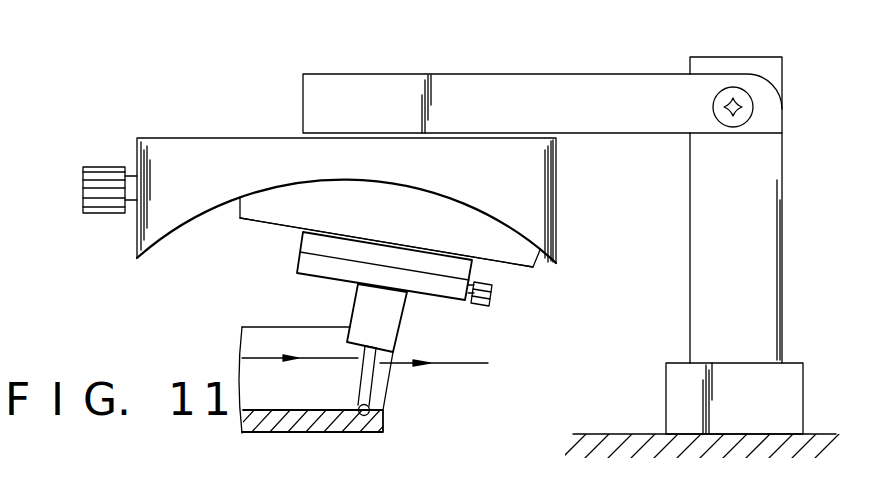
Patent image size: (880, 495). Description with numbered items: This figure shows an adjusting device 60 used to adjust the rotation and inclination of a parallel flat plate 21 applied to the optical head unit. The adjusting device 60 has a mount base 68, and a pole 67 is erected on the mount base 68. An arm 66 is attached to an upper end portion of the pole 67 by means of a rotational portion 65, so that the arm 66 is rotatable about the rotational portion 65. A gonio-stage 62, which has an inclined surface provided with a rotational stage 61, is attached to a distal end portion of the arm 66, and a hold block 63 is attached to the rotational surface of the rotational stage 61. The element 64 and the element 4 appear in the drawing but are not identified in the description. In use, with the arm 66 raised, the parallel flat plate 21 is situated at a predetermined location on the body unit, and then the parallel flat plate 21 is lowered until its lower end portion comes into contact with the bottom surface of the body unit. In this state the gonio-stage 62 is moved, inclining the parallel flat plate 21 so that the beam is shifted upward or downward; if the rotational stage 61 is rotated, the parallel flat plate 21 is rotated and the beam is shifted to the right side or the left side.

The conveyor table / belt support 4 is at (273, 422).
The parallel flat plate 21 is at (373, 378).
The adjusting device 60 is at (398, 66).
The rotational stage 61 is at (302, 262).
The gonio-stage 62 is at (552, 185).
The hold block 63 is at (363, 305).
The pivot joint 64 is at (374, 340).
The rotational portion 65 is at (750, 88).
The arm 66 is at (515, 97).
The pole 67 is at (713, 220).
The mount base 68 is at (675, 392).